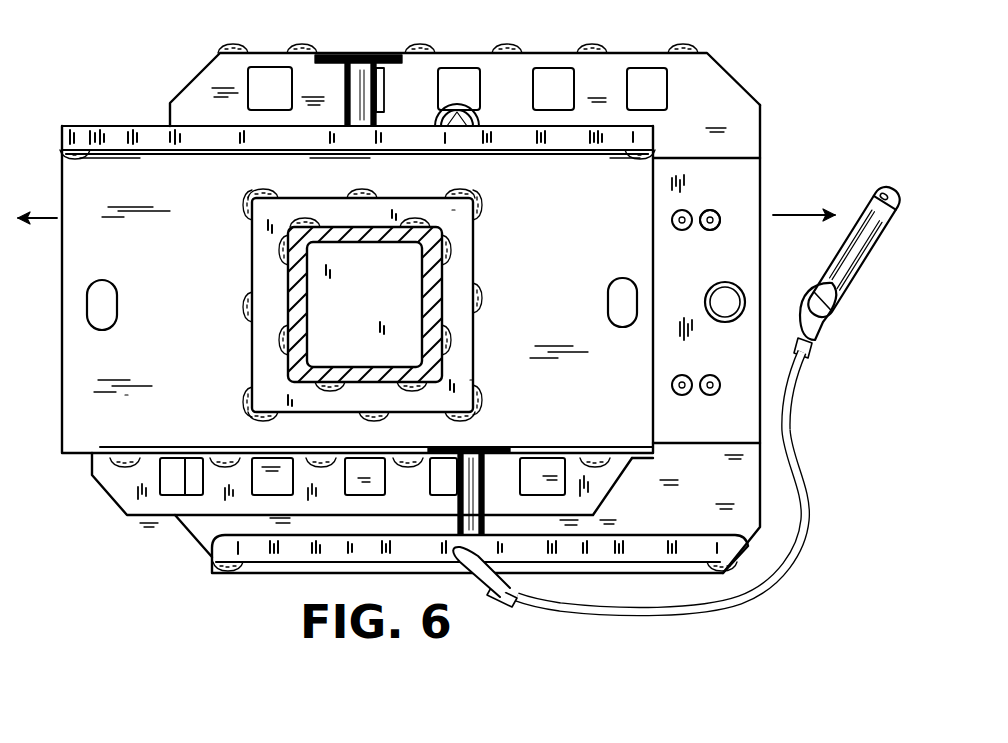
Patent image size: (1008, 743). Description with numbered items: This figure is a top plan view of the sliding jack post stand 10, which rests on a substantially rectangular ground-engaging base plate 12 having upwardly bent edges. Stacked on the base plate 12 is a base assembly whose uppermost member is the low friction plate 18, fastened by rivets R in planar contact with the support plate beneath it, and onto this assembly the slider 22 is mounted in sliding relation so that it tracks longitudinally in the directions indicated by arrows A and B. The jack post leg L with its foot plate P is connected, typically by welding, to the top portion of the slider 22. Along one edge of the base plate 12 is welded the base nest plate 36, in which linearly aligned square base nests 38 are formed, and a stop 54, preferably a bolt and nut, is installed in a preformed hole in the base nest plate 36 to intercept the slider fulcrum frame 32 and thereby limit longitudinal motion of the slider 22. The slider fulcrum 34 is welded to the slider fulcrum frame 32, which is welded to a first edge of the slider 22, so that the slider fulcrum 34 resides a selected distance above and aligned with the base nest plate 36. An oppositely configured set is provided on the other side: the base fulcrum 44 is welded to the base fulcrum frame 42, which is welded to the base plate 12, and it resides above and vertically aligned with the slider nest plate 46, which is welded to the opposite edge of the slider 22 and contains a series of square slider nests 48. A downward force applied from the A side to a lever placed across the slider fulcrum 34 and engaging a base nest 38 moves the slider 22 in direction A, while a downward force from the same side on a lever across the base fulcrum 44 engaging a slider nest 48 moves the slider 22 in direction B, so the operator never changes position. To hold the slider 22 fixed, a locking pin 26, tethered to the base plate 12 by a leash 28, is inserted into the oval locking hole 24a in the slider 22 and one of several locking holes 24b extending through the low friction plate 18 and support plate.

The sliding jack post stand 10 is at (780, 161).
The base plate 12 is at (713, 493).
The low friction plate 18 is at (753, 196).
The slider 22 is at (575, 238).
The locking hole 24a is at (112, 298).
The locking holes 24b is at (712, 296).
The locking pin 26 is at (850, 268).
The leash 28 is at (799, 428).
The slider fulcrum frame 32 is at (118, 128).
The slider fulcrum 34 is at (345, 90).
The base nest plate 36 is at (517, 72).
The base nests 38 is at (665, 103).
The base fulcrum frame 42 is at (636, 535).
The base fulcrum 44 is at (490, 478).
The slider nest plate 46 is at (125, 497).
The slider nests 48 is at (165, 470).
The stop 54 is at (480, 124).
The foot plate P is at (460, 233).
The jack post leg L is at (443, 318).
The rivets R is at (712, 210).
The arrow A is at (800, 217).
The arrow B is at (47, 218).